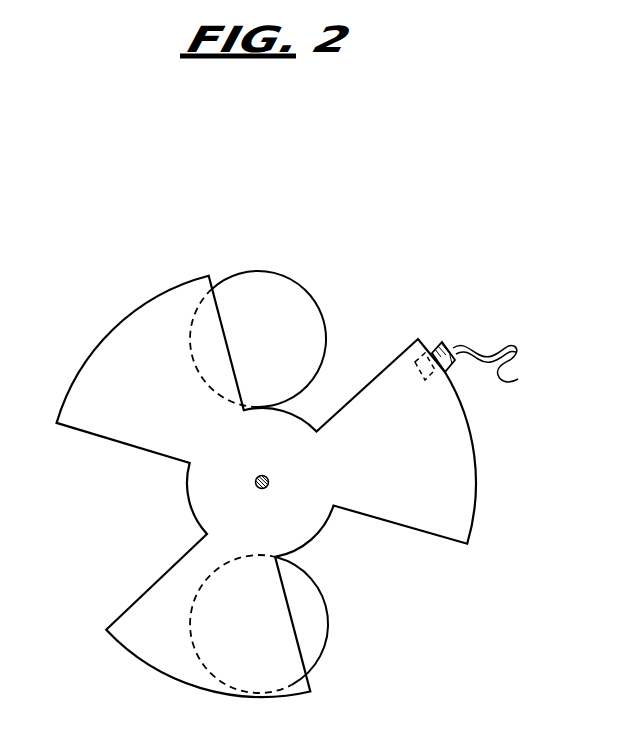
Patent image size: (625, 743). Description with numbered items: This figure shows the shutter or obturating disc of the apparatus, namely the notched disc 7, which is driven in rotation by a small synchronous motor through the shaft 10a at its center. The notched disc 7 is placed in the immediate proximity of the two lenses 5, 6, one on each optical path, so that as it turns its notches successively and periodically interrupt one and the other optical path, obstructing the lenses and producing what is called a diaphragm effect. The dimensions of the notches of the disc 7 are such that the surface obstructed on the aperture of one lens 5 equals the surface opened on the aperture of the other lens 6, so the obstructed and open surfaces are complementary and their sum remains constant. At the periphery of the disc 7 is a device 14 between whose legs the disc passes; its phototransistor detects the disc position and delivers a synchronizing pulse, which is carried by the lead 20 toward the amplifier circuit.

The lens 5 is at (302, 310).
The lens 6 is at (312, 617).
The notched disc 7 is at (452, 463).
The shaft 10a is at (255, 482).
The device 14 is at (428, 331).
The lead 20 is at (518, 379).